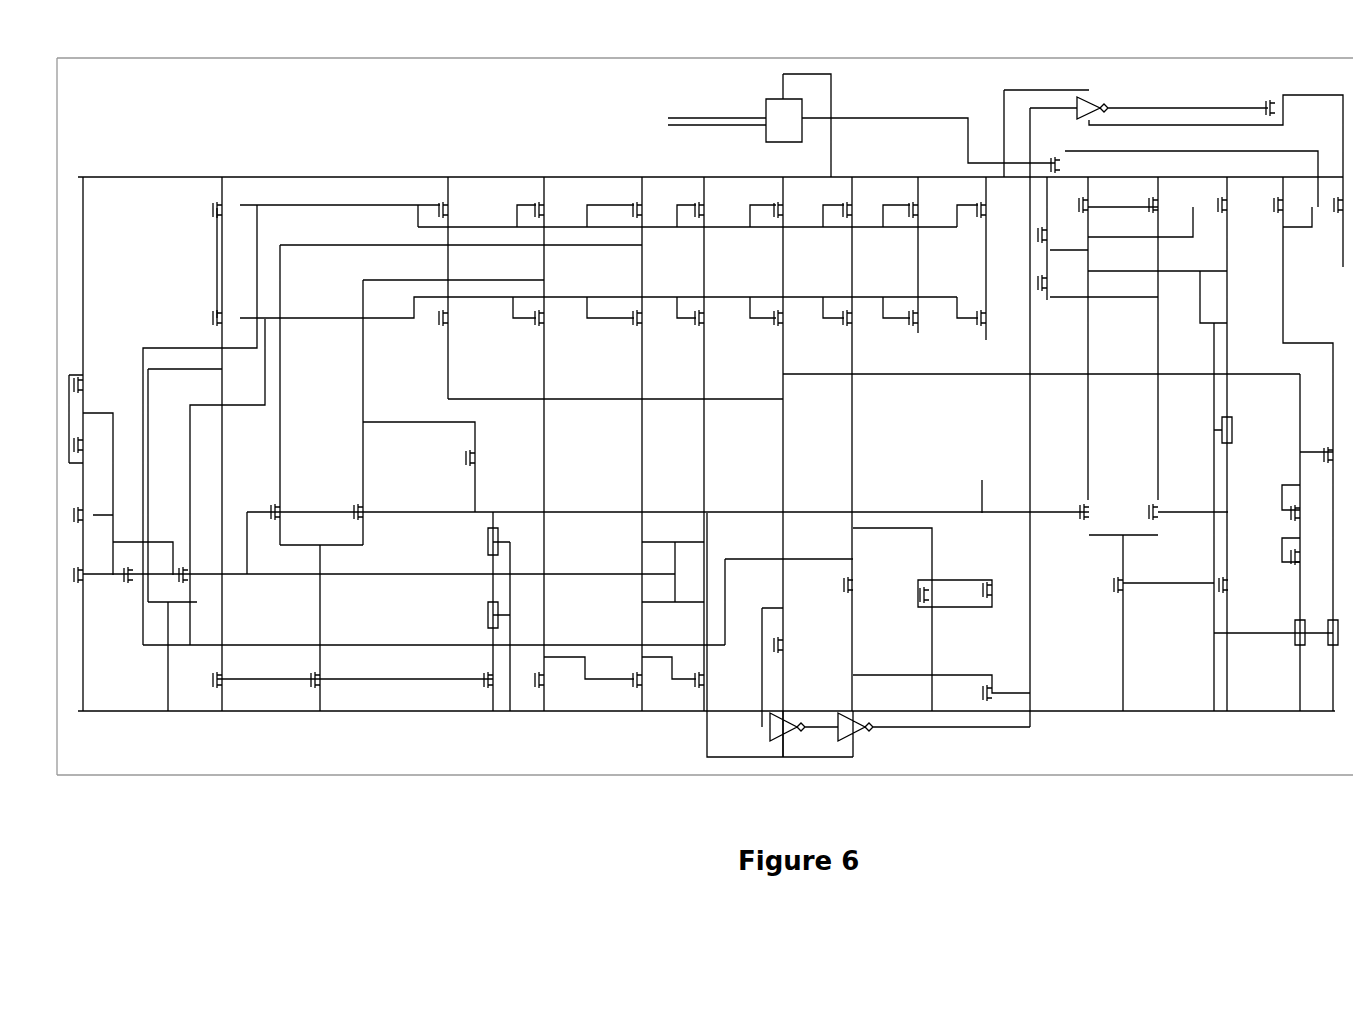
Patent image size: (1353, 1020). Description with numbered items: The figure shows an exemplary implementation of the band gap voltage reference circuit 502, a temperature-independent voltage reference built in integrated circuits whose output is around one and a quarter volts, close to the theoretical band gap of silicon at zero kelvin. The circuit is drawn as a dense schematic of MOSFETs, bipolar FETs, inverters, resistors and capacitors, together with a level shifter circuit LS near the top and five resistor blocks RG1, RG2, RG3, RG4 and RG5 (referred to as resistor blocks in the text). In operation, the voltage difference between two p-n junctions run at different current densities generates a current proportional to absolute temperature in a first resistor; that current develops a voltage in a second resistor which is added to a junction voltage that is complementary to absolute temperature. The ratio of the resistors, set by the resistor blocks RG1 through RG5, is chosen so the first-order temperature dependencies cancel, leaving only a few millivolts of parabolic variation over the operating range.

The band gap voltage reference circuit 502 is at (541, 58).
The level shifter circuit LS is at (861, 125).
The resistor block RG1 is at (474, 563).
The resistor block RG2 is at (474, 656).
The resistor block RG3 is at (1273, 621).
The resistor block RG4 is at (1330, 642).
The resistor block RG5 is at (1246, 429).